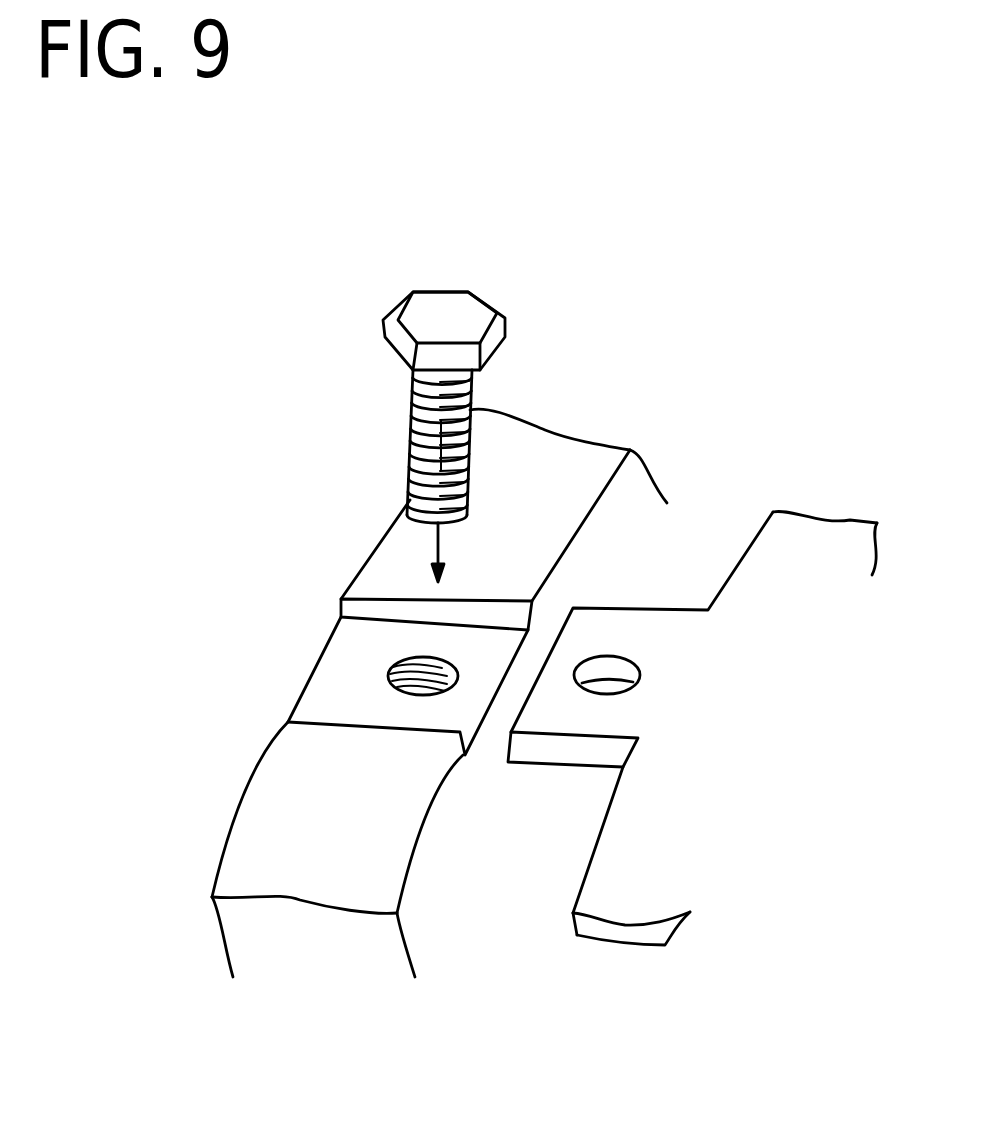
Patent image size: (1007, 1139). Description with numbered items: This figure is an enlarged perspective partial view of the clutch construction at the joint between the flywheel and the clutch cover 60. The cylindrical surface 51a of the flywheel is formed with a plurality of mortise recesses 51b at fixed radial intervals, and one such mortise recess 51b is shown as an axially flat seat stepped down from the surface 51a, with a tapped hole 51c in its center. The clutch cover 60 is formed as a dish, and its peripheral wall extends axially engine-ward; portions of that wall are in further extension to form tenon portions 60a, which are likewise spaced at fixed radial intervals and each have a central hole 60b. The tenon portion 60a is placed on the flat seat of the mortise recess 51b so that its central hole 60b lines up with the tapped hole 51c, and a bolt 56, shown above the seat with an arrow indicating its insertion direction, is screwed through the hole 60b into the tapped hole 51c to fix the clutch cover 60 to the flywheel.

The bolt 56 is at (398, 295).
The cylindrical surface 51a is at (547, 468).
The mortise recess 51b is at (302, 697).
The tapped hole 51c is at (407, 657).
The clutch cover 60 is at (800, 537).
The tenon portion 60a is at (557, 717).
The central hole 60b is at (607, 670).